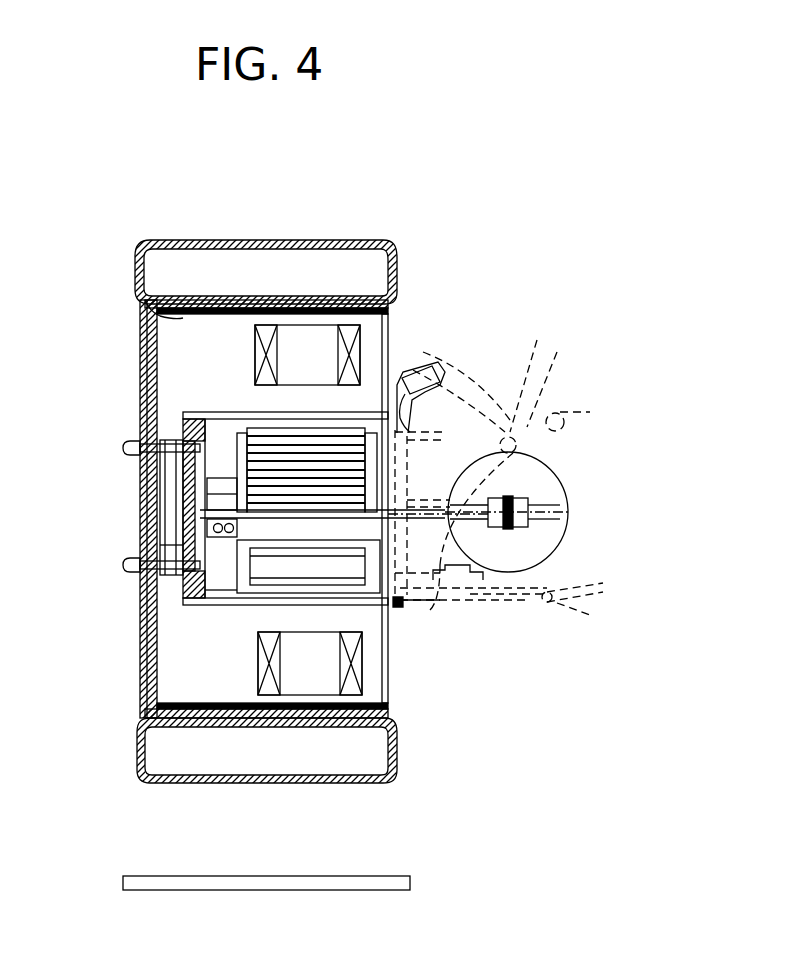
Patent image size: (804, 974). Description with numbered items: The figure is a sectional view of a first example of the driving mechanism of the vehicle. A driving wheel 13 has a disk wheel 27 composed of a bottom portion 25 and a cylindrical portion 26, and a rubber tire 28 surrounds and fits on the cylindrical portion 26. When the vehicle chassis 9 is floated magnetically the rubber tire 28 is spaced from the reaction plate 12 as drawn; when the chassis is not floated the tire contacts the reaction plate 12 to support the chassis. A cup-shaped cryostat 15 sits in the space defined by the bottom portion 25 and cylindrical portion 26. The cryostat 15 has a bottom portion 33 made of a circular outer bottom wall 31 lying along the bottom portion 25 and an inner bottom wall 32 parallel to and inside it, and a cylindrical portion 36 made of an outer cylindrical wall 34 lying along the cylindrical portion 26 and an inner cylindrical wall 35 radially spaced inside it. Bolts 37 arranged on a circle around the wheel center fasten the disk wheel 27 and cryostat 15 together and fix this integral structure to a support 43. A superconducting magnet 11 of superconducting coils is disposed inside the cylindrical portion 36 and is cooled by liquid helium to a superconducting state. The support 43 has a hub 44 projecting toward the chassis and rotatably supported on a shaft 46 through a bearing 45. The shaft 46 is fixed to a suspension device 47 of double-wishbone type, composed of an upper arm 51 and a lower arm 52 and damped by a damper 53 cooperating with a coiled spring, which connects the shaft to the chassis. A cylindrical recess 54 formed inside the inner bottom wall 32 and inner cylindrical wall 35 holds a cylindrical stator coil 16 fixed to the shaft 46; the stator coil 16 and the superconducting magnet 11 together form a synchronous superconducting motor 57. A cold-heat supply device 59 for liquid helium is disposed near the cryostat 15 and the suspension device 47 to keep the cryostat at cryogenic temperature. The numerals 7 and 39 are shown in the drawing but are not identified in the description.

The pivot arm assembly 7 is at (407, 355).
The vehicle chassis 9 is at (562, 453).
The superconducting magnet 11 is at (350, 328).
The reaction plate 12 is at (320, 890).
The driving wheel 13 is at (135, 654).
The cryostat 15 is at (390, 661).
The stator coil 16 is at (400, 600).
The bottom portion 25 is at (140, 382).
The cylindrical portion 26 is at (267, 302).
The disk wheel 27 is at (138, 606).
The rubber tire 28 is at (318, 246).
The outer bottom wall 31 is at (160, 318).
The inner bottom wall 32 is at (162, 468).
The bottom portion 33 is at (185, 541).
The outer cylindrical wall 34 is at (145, 312).
The inner cylindrical wall 35 is at (228, 410).
The cylindrical portion 36 is at (243, 358).
The bolts 37 is at (128, 568).
The housing 39 is at (202, 692).
The support 43 is at (185, 424).
The hub 44 is at (205, 514).
The bearing 45 is at (208, 598).
The shaft 46 is at (222, 498).
The suspension device 47 is at (476, 610).
The upper arm 51 is at (472, 378).
The lower arm 52 is at (505, 598).
The damper 53 is at (548, 372).
The cylindrical recess 54 is at (218, 540).
The synchronous superconducting motor 57 is at (365, 682).
The cold-heat supply device 59 is at (535, 520).